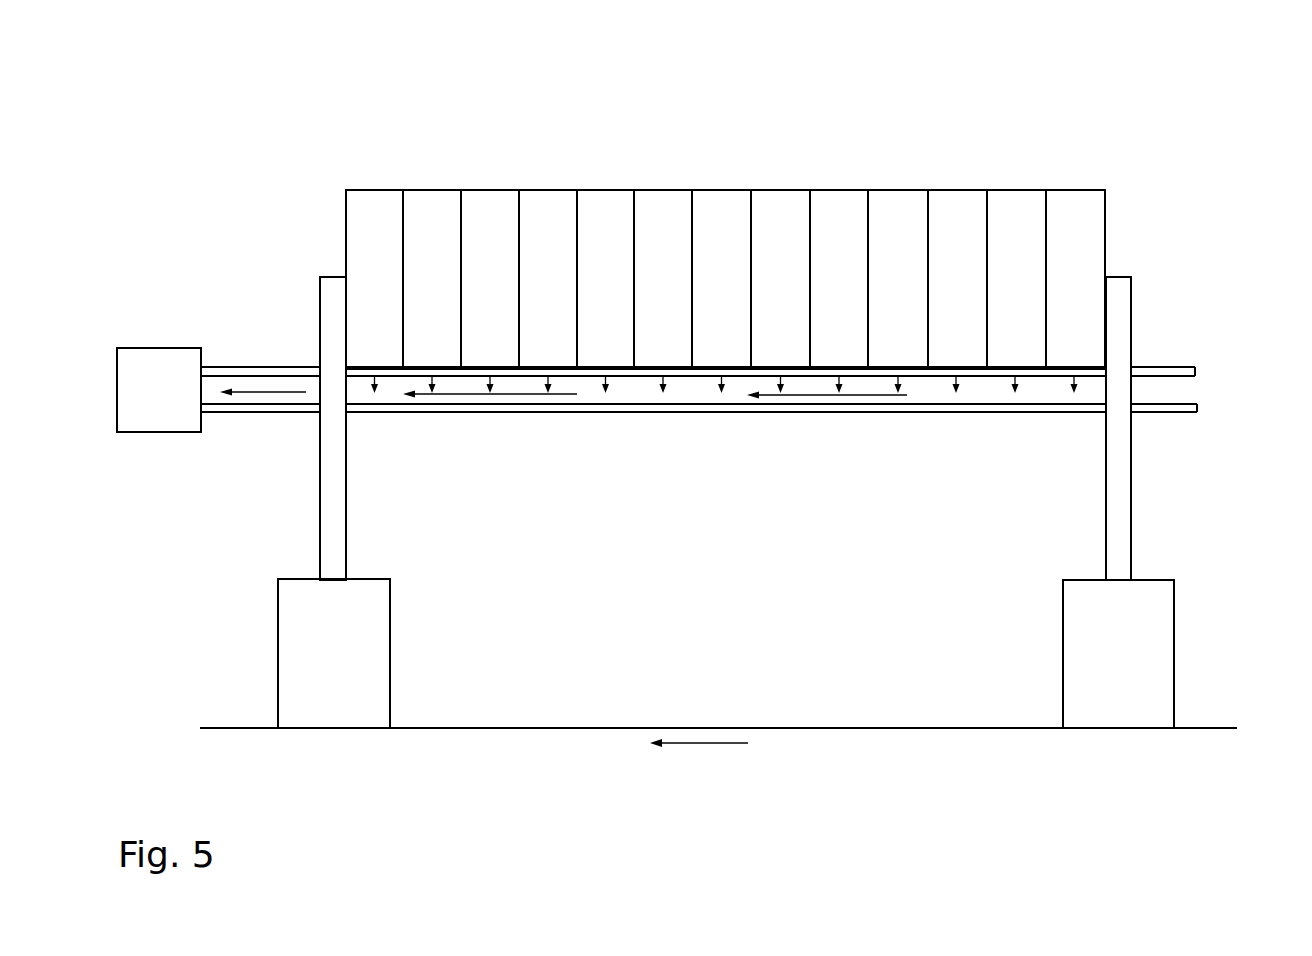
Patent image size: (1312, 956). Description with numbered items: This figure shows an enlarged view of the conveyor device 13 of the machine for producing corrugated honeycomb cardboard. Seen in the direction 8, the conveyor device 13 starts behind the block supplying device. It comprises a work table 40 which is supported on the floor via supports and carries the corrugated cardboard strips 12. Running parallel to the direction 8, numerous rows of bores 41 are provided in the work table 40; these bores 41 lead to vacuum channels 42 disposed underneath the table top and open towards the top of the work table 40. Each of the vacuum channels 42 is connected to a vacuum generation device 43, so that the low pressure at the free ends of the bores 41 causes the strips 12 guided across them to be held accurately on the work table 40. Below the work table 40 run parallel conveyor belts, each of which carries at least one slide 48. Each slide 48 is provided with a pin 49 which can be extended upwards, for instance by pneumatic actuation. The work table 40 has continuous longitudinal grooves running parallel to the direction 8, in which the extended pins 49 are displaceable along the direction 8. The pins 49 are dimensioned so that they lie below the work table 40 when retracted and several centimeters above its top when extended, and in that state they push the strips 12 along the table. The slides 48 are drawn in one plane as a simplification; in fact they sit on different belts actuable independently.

The direction 8 is at (705, 744).
The strips 12 is at (597, 200).
The conveyor device 13 is at (725, 187).
The work table 40 is at (1197, 372).
The bores 41 is at (1087, 372).
The vacuum channels 42 is at (676, 388).
The vacuum generation device 43 is at (141, 421).
The slide 48 is at (290, 613).
The pin 49 is at (326, 521).